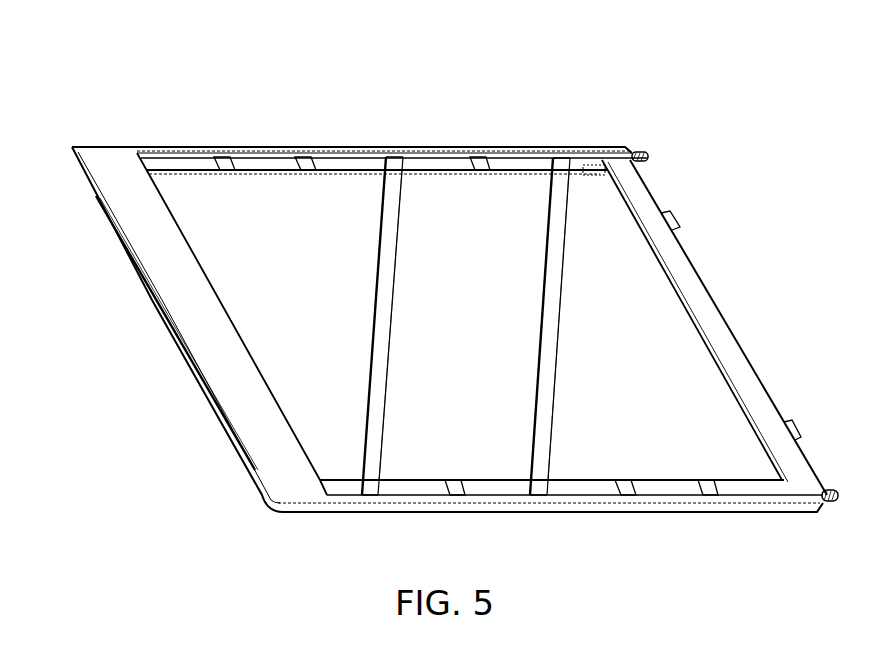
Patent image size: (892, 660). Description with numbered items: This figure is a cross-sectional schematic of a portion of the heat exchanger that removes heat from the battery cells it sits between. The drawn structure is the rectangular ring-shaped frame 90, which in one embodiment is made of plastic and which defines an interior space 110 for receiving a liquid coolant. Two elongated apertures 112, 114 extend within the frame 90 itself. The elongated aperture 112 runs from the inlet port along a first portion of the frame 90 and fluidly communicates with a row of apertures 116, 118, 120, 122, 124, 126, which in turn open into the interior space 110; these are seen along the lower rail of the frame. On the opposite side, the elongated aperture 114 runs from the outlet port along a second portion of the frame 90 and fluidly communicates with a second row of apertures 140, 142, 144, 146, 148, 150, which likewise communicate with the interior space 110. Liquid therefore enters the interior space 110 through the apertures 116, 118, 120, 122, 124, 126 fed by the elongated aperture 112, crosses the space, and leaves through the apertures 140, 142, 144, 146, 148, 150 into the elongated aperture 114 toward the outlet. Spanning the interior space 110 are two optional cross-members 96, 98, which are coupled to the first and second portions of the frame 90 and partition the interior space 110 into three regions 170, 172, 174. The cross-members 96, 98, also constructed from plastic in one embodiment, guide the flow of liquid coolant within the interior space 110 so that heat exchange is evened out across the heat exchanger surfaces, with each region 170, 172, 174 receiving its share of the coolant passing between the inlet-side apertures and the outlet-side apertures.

The rectangular ring-shaped frame 90 is at (595, 137).
The cross-member 96 is at (387, 358).
The cross-member 98 is at (553, 380).
The interior space 110 is at (277, 284).
The elongated aperture 112 is at (600, 497).
The elongated aperture 114 is at (502, 150).
The aperture 116 is at (343, 487).
The aperture 118 is at (423, 490).
The aperture 120 is at (500, 490).
The aperture 122 is at (592, 488).
The aperture 124 is at (668, 488).
The aperture 126 is at (730, 488).
The aperture 140 is at (192, 166).
The aperture 142 is at (270, 166).
The aperture 144 is at (352, 162).
The aperture 146 is at (438, 166).
The aperture 148 is at (515, 166).
The aperture 150 is at (587, 166).
The region 170 is at (300, 372).
The region 172 is at (461, 322).
The region 174 is at (618, 359).